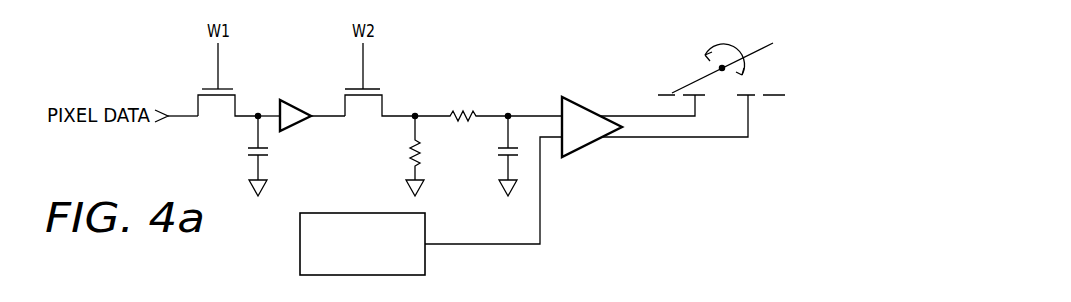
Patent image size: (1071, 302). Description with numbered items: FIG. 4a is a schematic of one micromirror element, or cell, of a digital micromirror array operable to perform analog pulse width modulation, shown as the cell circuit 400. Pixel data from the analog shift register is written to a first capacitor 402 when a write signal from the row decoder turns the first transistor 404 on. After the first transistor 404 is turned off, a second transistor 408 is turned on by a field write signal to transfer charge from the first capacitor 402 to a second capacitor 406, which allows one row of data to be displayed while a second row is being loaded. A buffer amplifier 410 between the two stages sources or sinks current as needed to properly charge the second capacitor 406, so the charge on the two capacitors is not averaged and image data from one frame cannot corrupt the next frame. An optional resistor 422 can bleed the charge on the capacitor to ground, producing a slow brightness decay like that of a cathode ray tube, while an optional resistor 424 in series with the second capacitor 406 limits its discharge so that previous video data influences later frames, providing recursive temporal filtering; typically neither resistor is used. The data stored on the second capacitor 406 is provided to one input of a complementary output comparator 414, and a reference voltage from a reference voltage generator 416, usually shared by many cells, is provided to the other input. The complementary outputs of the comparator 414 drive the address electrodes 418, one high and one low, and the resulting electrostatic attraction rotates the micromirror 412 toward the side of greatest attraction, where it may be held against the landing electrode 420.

The sample and hold circuit 400 is at (651, 187).
The first capacitor 402 is at (246, 150).
The first transistor 404 is at (210, 88).
The second capacitor 406 is at (496, 150).
The second transistor 408 is at (352, 88).
The buffer amplifier 410 is at (294, 131).
The micromirror 412 is at (752, 60).
The complementary output comparator 414 is at (585, 103).
The reference voltage generator 416 is at (300, 245).
The address electrodes 418 is at (703, 93).
The landing electrode 420 is at (668, 93).
The resistor 422 is at (408, 155).
The resistor 424 is at (462, 108).